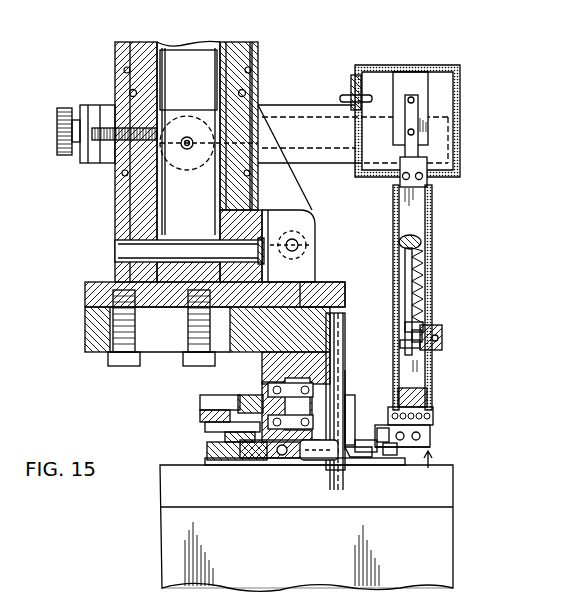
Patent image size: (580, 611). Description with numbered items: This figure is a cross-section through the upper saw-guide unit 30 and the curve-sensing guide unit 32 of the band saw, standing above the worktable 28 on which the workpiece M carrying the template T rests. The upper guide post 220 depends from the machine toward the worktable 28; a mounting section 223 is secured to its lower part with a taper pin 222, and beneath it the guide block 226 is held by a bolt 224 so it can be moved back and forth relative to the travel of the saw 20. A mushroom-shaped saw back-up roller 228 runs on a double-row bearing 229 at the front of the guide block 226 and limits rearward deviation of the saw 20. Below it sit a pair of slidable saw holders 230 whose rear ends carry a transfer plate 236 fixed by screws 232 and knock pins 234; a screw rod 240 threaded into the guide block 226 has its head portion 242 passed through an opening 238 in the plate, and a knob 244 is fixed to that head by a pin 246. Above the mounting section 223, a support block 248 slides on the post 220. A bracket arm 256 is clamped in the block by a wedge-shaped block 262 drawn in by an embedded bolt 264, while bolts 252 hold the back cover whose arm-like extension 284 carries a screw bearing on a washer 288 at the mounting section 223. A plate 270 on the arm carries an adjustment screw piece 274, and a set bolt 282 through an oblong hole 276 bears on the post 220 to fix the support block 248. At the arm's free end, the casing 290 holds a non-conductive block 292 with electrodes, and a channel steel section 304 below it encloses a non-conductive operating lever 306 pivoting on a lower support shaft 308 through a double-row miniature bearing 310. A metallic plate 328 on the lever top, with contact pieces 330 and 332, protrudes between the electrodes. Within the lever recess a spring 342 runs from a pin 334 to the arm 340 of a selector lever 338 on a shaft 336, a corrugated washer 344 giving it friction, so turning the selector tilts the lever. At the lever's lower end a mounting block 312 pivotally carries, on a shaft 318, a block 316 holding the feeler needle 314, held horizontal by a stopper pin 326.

The upper guide post 220 is at (232, 56).
The block 262 is at (190, 95).
The bolts 252 is at (124, 66).
The embedded bolt 264 is at (129, 90).
The support block 248 is at (254, 86).
The adjustment screw piece 274 is at (64, 108).
The plate 270 is at (84, 160).
The through oblong hole 276 is at (188, 172).
The set bolt 282 is at (353, 157).
The casing 290 is at (458, 111).
The enclosed block 292 is at (406, 80).
The contact piece 330 is at (415, 100).
The contact piece 332 is at (415, 132).
The metallic plate 328 is at (430, 175).
The bracket arm 256 is at (346, 94).
The curve-sensing guide unit 32 is at (436, 205).
The pin 334 is at (422, 240).
The spring 342 is at (425, 290).
The channel steel section 304 is at (430, 262).
The arm 340 is at (425, 322).
The selector lever 338 is at (442, 338).
The corrugated washer 344 is at (438, 333).
The shaft 336 is at (425, 346).
The operating lever 306 is at (428, 396).
The double-row miniature bearing 310 is at (434, 415).
The lower support shaft 308 is at (432, 437).
The mounting block 312 is at (440, 455).
The template T is at (450, 467).
The arm-like extension 284 is at (313, 212).
The washer 288 is at (300, 245).
The taper pin 222 is at (115, 250).
The mounting section 223 is at (85, 300).
The double-row bearing 229 is at (280, 345).
The guide block 226 is at (310, 305).
The bolt 224 is at (186, 357).
The upper saw-guide unit 30 is at (376, 307).
The saw 20 is at (344, 335).
The saw back-up roller 228 is at (345, 375).
The stopper pin 326 is at (350, 402).
The transfer plate 236 is at (265, 400).
The screw rod 240 is at (260, 410).
The opening 238 is at (212, 406).
The head portion 242 is at (200, 415).
The knob 244 is at (206, 428).
The pin 246 is at (226, 440).
The screws 232 is at (225, 462).
The knock pins 234 is at (258, 464).
The saw holders 230 is at (291, 466).
The feeler needle 314 is at (335, 464).
The block 316 is at (392, 462).
The shaft 318 is at (372, 442).
The workpiece M is at (452, 495).
The worktable 28 is at (494, 555).